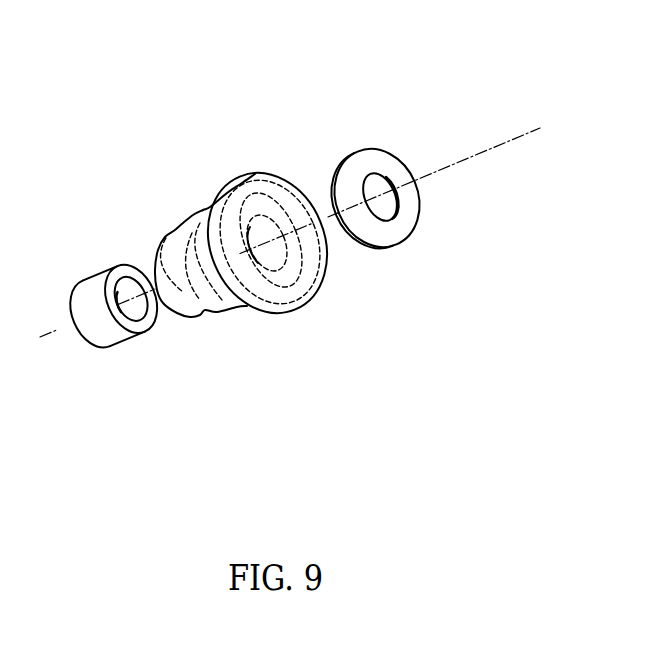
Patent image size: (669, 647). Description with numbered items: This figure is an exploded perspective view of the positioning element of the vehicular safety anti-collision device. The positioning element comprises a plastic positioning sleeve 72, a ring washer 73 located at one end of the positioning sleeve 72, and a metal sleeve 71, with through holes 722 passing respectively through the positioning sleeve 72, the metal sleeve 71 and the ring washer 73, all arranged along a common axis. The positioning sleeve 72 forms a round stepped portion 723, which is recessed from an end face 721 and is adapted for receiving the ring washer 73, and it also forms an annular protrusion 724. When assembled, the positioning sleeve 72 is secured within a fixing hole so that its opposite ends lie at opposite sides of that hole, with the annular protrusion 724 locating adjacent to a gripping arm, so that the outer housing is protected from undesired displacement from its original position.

The metal sleeve 71 is at (89, 298).
The positioning sleeve 72 is at (203, 260).
The end face 721 is at (280, 293).
The through holes 722 is at (272, 250).
The round stepped portion 723 is at (278, 198).
The annular protrusion 724 is at (212, 295).
The ring washer 73 is at (388, 163).